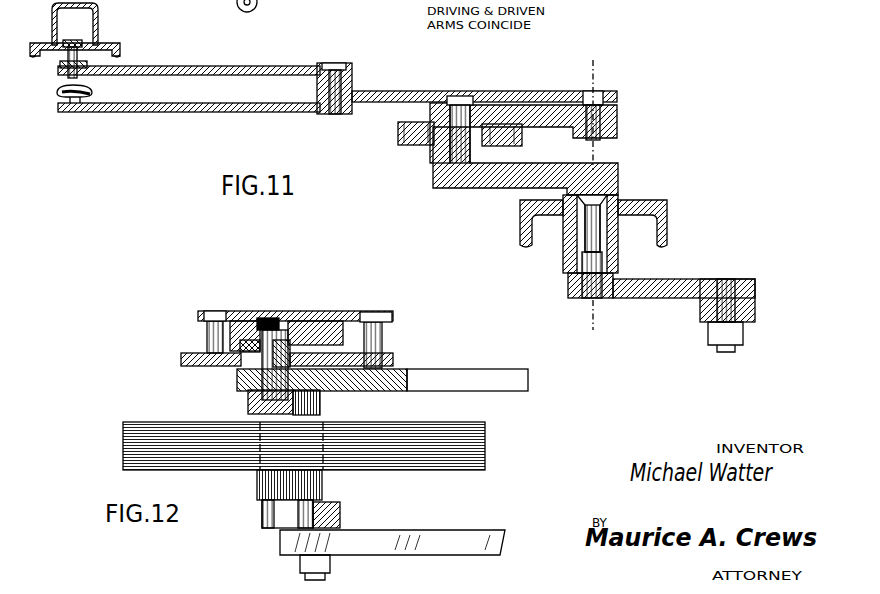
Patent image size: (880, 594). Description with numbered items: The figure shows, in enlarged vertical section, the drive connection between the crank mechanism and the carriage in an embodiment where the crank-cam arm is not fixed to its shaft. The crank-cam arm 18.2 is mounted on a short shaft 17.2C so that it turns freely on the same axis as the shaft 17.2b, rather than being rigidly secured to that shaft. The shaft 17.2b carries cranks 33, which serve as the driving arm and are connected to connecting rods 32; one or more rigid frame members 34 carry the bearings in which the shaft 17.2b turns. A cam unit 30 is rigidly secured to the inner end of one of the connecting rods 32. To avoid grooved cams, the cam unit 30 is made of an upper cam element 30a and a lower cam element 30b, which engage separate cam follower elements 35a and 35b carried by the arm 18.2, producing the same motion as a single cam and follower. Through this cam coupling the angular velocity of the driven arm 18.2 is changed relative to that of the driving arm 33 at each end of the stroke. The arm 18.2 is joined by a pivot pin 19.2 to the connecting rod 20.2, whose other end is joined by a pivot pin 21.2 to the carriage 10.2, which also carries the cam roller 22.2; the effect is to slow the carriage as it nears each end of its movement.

In FIG. 11, the carriage 10.2 is at (100, 14).
In FIG. 11, the pivot pin 21.2 is at (74, 40).
In FIG. 11, the connecting rod 20.2 is at (228, 66).
In FIG. 11, the cam roller 22.2 is at (90, 91).
In FIG. 11, the pivot pin 19.2 is at (334, 62).
In FIG. 11, the crank-cam arm 18.2 is at (392, 92).
In FIG. 12, the crank-cam arm 18.2 is at (233, 311).
In FIG. 11, the short shaft 17.2C is at (596, 141).
In FIG. 11, the shaft 17.2b is at (590, 238).
In FIG. 12, the shaft 17.2b is at (264, 510).
In FIG. 11, the cam unit 30 is at (395, 154).
In FIG. 12, the cam unit 30 is at (180, 360).
In FIG. 11, the upper cam element 30a is at (398, 130).
In FIG. 12, the upper cam element 30a is at (315, 345).
In FIG. 11, the lower cam element 30b is at (410, 148).
In FIG. 12, the lower cam element 30b is at (300, 358).
In FIG. 11, the connecting rod 32 is at (432, 160).
In FIG. 12, the connecting rod 32 is at (470, 378).
In FIG. 11, the crank 33 is at (519, 134).
In FIG. 12, the crank 33 is at (270, 318).
In FIG. 11, the rigid frame member 34 is at (667, 210).
In FIG. 12, the rigid frame member 34 is at (485, 443).
In FIG. 12, the cam follower element 35a is at (200, 320).
In FIG. 12, the cam follower element 35b is at (382, 358).